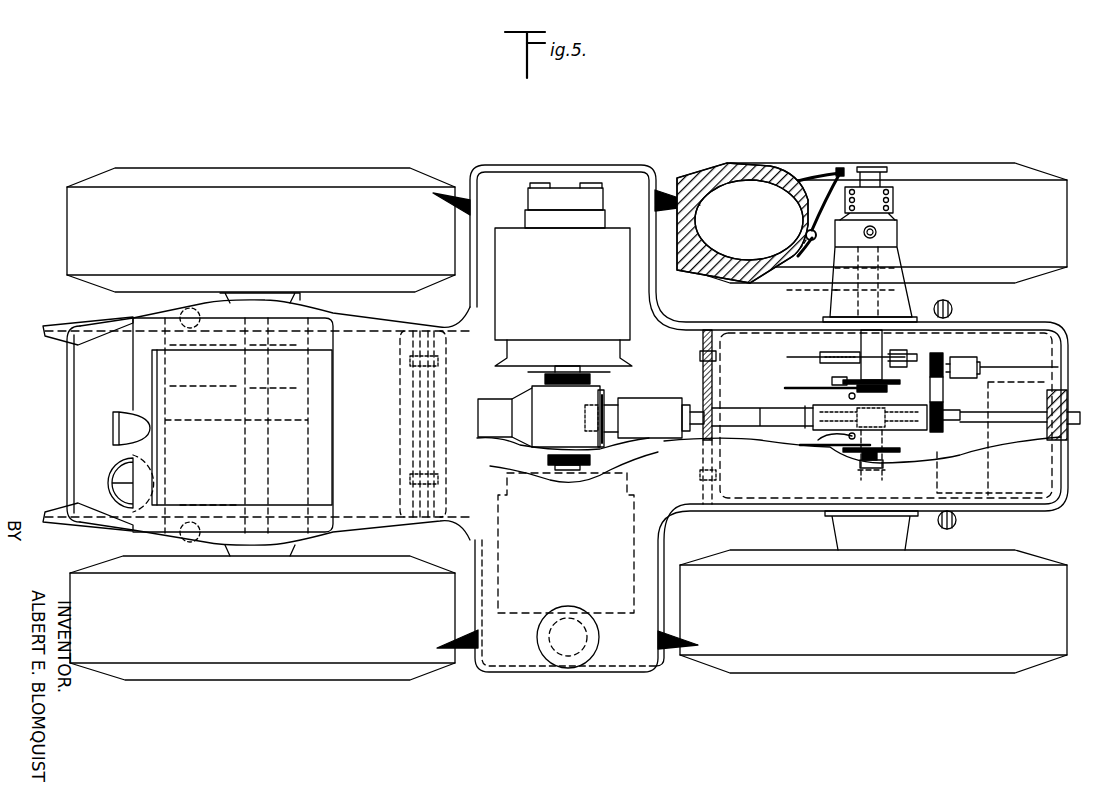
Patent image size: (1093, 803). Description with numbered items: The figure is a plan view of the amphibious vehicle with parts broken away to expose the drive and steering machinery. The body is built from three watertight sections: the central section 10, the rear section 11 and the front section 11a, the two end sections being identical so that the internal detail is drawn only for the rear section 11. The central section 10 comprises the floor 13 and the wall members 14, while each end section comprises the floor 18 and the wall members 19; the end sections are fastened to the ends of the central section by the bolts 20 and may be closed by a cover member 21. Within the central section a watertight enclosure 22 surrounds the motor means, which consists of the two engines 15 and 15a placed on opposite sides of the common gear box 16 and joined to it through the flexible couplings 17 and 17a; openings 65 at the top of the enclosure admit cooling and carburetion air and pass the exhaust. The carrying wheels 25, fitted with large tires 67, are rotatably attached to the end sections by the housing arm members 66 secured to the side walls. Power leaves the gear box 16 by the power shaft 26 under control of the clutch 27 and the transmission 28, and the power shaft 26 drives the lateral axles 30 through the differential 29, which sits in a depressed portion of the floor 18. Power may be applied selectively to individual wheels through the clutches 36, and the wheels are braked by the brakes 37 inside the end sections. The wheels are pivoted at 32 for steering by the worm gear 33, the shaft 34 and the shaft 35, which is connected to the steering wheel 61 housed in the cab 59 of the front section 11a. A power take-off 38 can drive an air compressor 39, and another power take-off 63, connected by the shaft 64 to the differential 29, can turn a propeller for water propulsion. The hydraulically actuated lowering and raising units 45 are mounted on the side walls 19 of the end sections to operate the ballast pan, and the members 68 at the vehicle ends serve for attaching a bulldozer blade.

The central section 10 is at (630, 164).
The rear section 11 is at (1052, 318).
The front section 11a is at (62, 378).
The floor 13 is at (493, 200).
The wall members 14 is at (535, 164).
The engine 15 is at (563, 274).
The engine 15a is at (515, 600).
The gear box 16 is at (548, 416).
The flexible coupling 17 is at (588, 378).
The flexible coupling 17a is at (590, 460).
The floor 18 is at (1014, 332).
The wall members 19 is at (1072, 350).
The bolts 20 is at (410, 362).
The cover member 21 is at (350, 340).
The enclosure 22 is at (636, 202).
The carrying wheels 25 is at (277, 182).
The power shaft 26 is at (748, 412).
The clutch 27 is at (604, 404).
The transmission 28 is at (662, 406).
The differential 29 is at (900, 430).
The lateral axles 30 is at (882, 340).
The pivot 32 is at (878, 236).
The worm gear 33 is at (817, 220).
The shaft 34 is at (805, 292).
The shaft 35 is at (810, 356).
The clutches 36 is at (880, 380).
The brakes 37 is at (887, 388).
The power take-off 38 is at (945, 414).
The air compressor 39 is at (962, 358).
The lowering and raising units 45 is at (950, 307).
The cab 59 is at (140, 315).
The steering wheel 61 is at (105, 470).
The power take-off 63 is at (1073, 414).
The shaft 64 is at (991, 438).
The openings 65 is at (570, 645).
The housing arm members 66 is at (293, 295).
The tires 67 is at (735, 165).
The members 68 is at (50, 328).